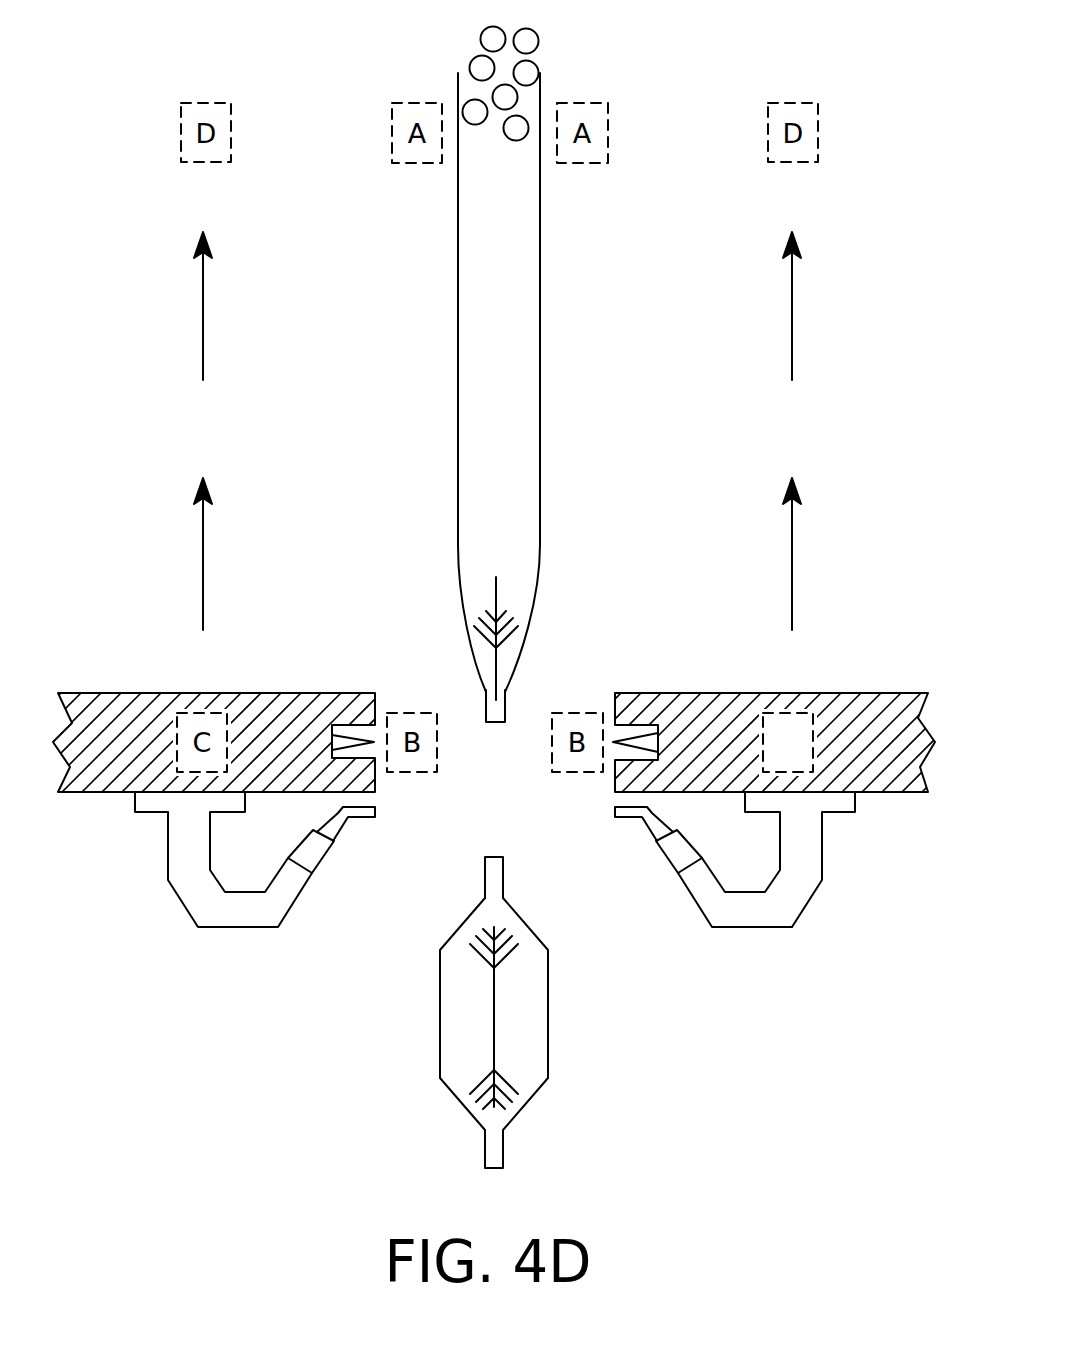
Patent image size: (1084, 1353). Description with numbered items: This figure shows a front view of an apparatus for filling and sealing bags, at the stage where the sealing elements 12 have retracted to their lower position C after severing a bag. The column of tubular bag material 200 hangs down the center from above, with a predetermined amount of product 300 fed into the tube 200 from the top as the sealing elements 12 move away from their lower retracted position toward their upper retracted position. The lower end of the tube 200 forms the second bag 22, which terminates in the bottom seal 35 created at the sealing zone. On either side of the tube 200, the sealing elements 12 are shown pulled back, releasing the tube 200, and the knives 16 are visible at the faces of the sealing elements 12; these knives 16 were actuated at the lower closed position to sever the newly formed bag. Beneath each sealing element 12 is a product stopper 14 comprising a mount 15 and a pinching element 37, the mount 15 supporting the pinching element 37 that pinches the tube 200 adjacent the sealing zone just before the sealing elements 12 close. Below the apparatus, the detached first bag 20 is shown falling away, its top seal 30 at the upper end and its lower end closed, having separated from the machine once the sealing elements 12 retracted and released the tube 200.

The product 300 is at (575, 39).
The tube 200 is at (542, 338).
The second bag 22 is at (505, 527).
The bottom seal 35 is at (505, 703).
The sealing element 12 is at (858, 716).
The knife 16 is at (636, 742).
The mount 15 is at (822, 845).
The product stopper 14 is at (748, 928).
The pinching element 37 is at (662, 858).
The top seal 30 is at (483, 880).
The first bag 20 is at (455, 1017).